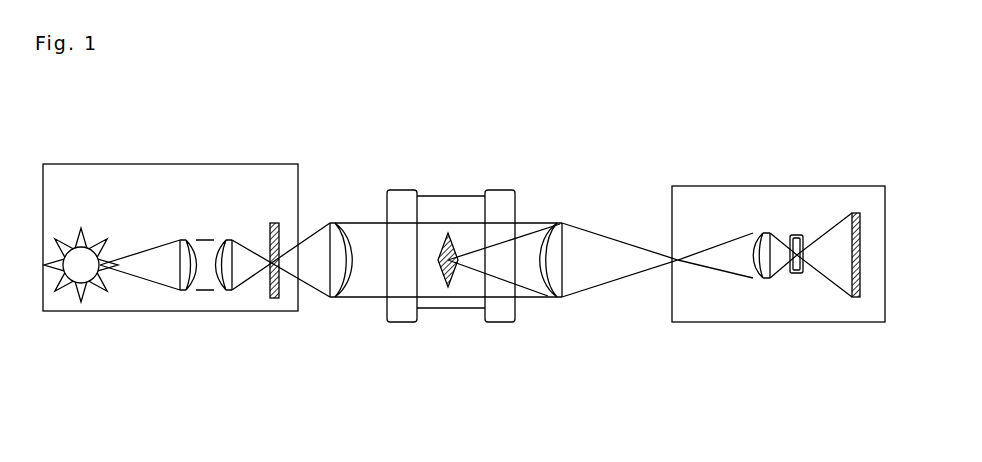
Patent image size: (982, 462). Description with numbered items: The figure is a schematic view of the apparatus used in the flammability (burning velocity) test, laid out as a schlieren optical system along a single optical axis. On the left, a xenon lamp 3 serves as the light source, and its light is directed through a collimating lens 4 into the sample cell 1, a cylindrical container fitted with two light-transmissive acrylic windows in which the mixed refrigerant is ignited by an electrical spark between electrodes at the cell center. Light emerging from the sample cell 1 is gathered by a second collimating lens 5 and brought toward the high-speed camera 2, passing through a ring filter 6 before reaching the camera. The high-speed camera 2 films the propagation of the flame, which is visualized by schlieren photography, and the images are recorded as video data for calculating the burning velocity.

The sample cell 1 is at (448, 177).
The high-speed camera 2 is at (793, 178).
The xenon lamp 3 is at (97, 299).
The collimating lens 4 is at (357, 305).
The collimating lens 5 is at (540, 305).
The ring filter 6 is at (797, 277).